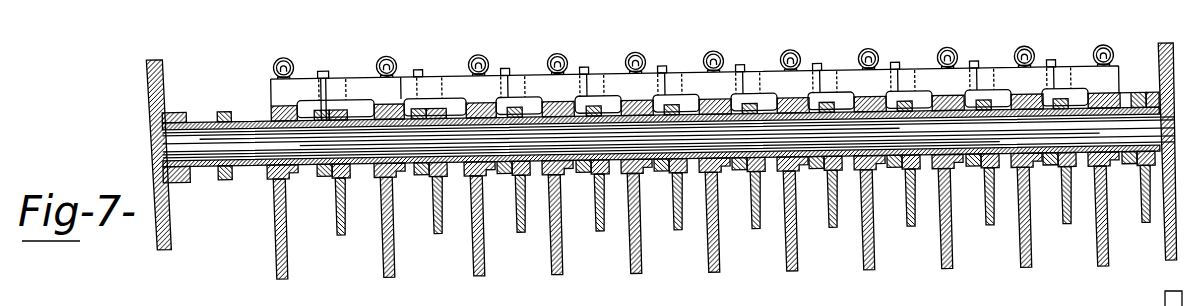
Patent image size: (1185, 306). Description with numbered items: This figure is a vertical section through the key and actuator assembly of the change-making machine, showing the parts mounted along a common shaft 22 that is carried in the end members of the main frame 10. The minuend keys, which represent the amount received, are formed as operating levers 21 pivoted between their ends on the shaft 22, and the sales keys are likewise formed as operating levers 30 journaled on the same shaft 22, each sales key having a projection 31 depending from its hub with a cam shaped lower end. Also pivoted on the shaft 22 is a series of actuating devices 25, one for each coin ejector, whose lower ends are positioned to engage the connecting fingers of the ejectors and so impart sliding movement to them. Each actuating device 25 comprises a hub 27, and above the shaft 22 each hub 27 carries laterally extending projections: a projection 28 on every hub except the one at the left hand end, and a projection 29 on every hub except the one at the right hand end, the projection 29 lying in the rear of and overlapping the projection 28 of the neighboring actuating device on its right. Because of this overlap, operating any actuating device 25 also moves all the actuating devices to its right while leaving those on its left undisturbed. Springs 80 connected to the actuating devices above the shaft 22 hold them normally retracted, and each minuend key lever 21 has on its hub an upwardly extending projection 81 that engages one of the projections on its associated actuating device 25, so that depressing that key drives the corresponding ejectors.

The main frame 10 is at (165, 74).
The operating lever 21 is at (402, 186).
The shaft 22 is at (256, 144).
The actuating device 25 is at (273, 252).
The hub 27 is at (280, 174).
The projection 28 is at (512, 83).
The projection 29 is at (440, 89).
The operating lever 30 is at (343, 170).
The projection 31 is at (348, 228).
The spring 80 is at (275, 63).
The projection 81 is at (330, 66).